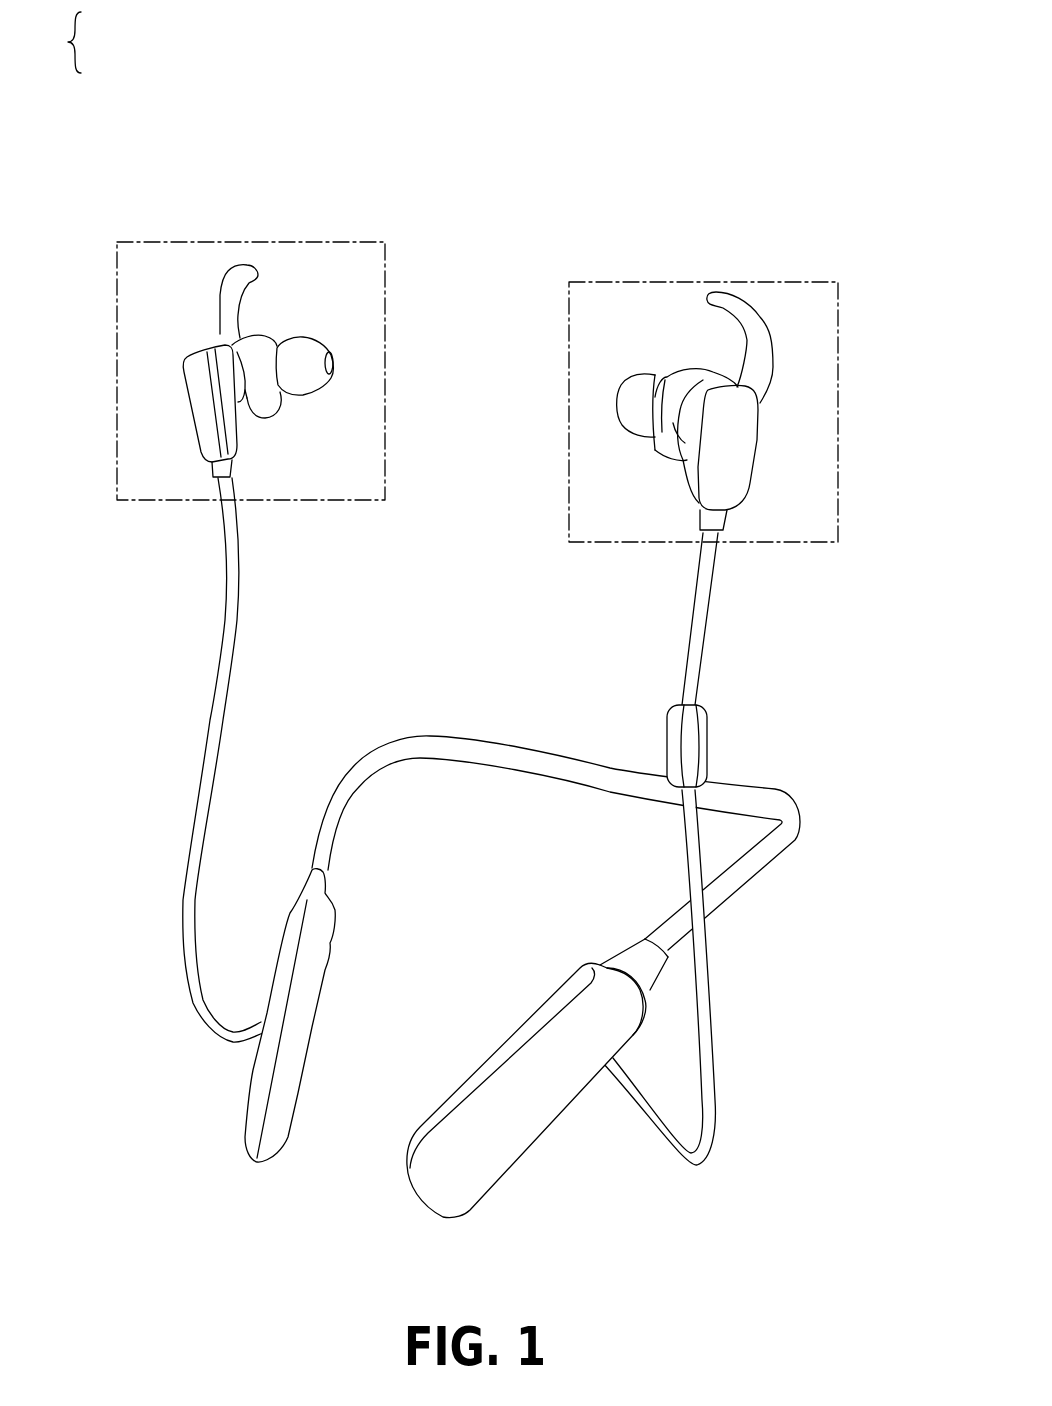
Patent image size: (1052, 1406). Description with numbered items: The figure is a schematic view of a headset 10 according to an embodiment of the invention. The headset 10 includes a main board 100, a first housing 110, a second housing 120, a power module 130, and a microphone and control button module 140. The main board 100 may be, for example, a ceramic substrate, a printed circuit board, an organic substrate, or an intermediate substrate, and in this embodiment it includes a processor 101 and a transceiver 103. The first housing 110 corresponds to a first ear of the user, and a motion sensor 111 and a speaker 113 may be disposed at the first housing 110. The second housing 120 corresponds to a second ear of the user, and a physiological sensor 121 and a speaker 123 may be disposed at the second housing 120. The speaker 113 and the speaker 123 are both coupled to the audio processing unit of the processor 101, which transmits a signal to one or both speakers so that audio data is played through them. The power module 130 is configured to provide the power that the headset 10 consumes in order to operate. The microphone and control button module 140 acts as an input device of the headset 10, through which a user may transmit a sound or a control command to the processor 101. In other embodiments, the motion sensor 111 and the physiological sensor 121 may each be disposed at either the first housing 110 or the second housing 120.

The headset 10 is at (886, 1256).
The main board 100 is at (488, 1157).
The processor 101 is at (104, 21).
The transceiver 103 is at (104, 63).
The first housing 110 is at (340, 241).
The motion sensor 111 is at (193, 400).
The speaker 113 is at (313, 348).
The second housing 120 is at (795, 282).
The physiological sensor 121 is at (743, 450).
The speaker 123 is at (637, 380).
The power module 130 is at (257, 1098).
The microphone and control button module 140 is at (704, 748).